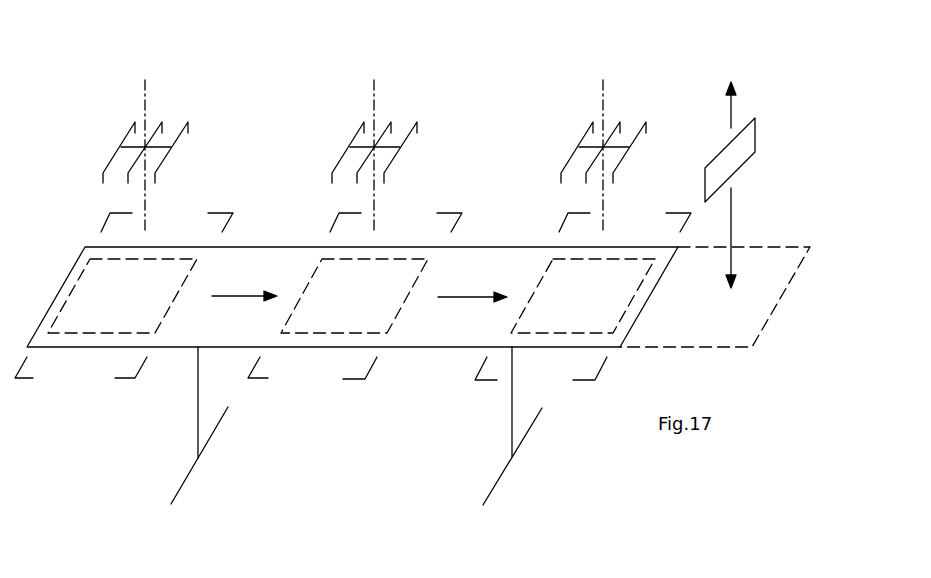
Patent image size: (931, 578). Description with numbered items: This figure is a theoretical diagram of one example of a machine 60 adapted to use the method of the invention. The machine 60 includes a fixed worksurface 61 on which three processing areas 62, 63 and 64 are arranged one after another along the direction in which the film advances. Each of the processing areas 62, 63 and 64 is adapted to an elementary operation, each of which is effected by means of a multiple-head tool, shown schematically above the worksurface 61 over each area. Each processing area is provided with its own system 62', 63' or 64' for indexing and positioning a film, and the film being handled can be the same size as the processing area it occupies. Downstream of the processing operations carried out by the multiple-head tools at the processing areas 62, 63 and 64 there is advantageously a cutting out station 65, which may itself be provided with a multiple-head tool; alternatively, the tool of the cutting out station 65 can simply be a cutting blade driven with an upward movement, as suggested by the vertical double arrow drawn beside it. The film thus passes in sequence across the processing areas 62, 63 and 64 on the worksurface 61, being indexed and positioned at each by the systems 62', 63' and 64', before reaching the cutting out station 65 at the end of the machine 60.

The machine 60 is at (93, 417).
The fixed worksurface 61 is at (65, 282).
The processing area 62 is at (152, 140).
The system for indexing and positioning a film 62' is at (178, 189).
The processing area 63 is at (380, 141).
The system for indexing and positioning a film 63' is at (405, 189).
The processing area 64 is at (606, 143).
The system for indexing and positioning a film 64' is at (628, 188).
The cutting out station 65 is at (757, 137).